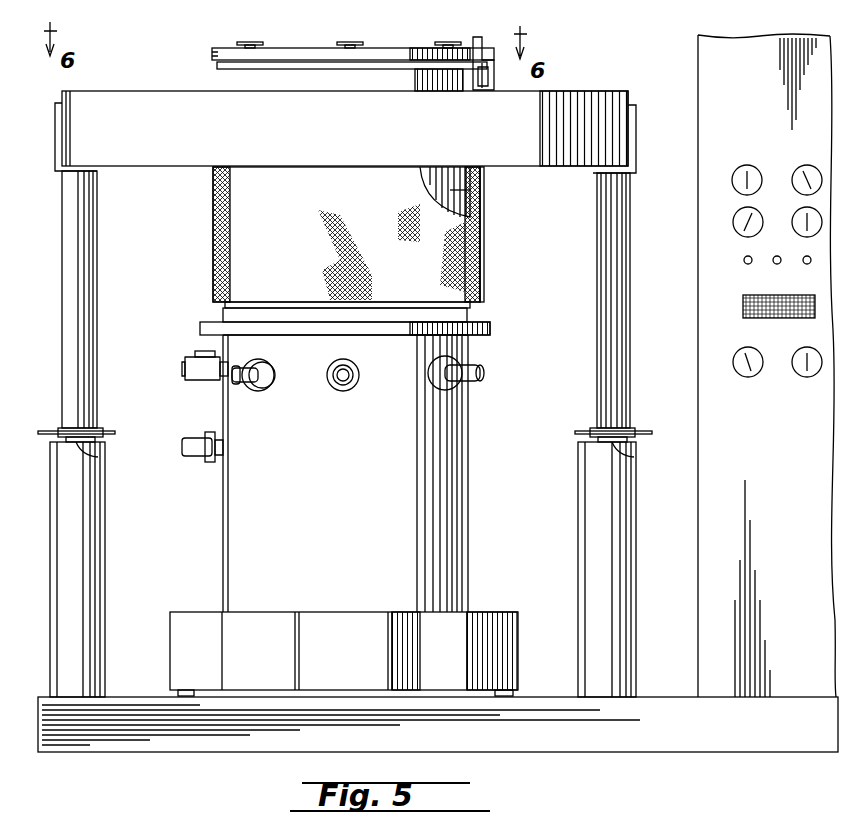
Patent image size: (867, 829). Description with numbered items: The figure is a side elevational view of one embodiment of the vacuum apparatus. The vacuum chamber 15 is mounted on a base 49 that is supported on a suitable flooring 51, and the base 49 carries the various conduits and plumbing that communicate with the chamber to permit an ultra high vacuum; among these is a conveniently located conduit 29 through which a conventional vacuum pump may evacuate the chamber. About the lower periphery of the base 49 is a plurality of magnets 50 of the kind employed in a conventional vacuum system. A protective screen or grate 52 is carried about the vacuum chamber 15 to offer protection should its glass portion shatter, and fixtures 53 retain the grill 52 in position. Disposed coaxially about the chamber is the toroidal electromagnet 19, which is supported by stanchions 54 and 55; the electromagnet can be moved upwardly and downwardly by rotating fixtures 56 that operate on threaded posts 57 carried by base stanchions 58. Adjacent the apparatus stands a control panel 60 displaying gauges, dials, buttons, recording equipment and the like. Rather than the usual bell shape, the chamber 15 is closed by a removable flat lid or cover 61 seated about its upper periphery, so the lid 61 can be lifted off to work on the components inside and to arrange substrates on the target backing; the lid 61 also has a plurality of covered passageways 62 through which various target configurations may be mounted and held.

The vacuum chamber 15 is at (470, 190).
The toroidal electromagnet 19 is at (601, 92).
The conduit 29 is at (462, 358).
The base 49 is at (455, 478).
The magnets 50 is at (172, 612).
The flooring 51 is at (136, 745).
The protective screen or grate 52 is at (478, 262).
The fixtures 53 is at (490, 40).
The stanchion 54 is at (84, 226).
The stanchion 55 is at (622, 306).
The fixtures 56 is at (100, 428).
The threaded posts 57 is at (99, 458).
The base stanchions 58 is at (104, 507).
The control panel 60 is at (703, 261).
The removable flat lid or cover 61 is at (316, 47).
The covered passageways 62 is at (262, 32).